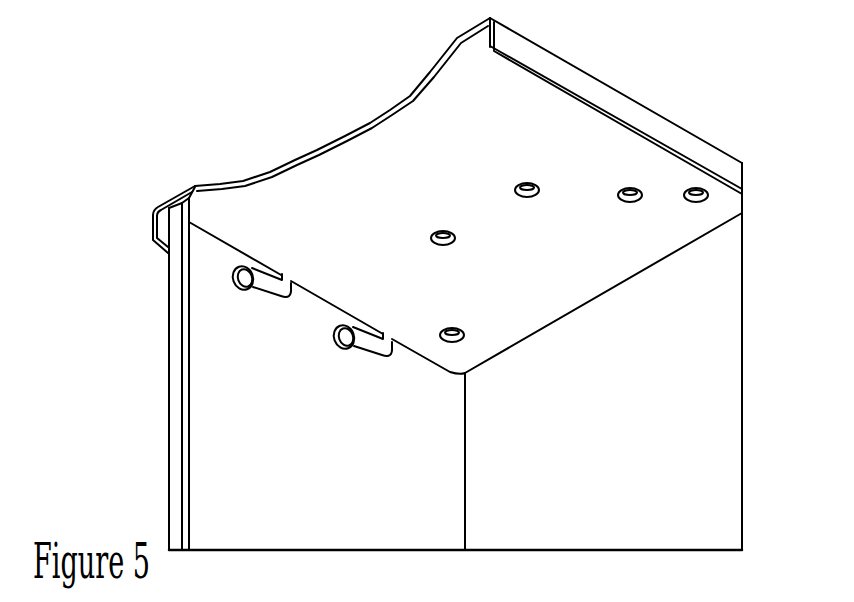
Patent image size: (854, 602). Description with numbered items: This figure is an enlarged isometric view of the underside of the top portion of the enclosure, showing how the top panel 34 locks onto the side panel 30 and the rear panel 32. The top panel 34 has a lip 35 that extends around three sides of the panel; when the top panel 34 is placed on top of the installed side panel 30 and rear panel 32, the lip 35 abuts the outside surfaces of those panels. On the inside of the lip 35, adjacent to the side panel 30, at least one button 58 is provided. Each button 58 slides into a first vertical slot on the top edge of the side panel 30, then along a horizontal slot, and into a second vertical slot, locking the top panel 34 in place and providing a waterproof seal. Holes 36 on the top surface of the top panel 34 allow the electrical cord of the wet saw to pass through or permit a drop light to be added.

The side panel 30 is at (175, 397).
The rear panel 32 is at (723, 323).
The top panel 34 is at (368, 125).
The lip 35 is at (154, 243).
The holes 36 is at (530, 188).
The button 58 is at (245, 270).